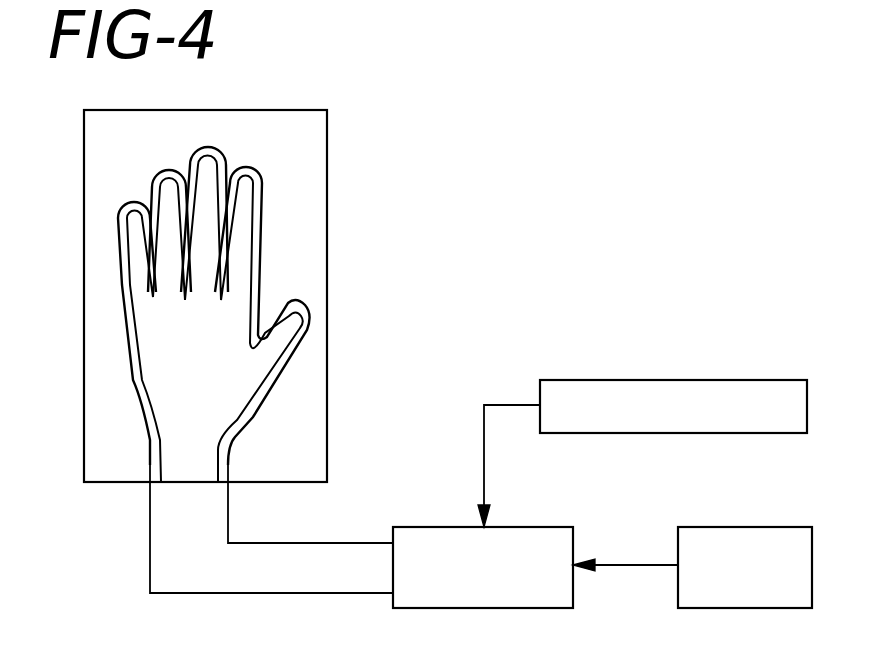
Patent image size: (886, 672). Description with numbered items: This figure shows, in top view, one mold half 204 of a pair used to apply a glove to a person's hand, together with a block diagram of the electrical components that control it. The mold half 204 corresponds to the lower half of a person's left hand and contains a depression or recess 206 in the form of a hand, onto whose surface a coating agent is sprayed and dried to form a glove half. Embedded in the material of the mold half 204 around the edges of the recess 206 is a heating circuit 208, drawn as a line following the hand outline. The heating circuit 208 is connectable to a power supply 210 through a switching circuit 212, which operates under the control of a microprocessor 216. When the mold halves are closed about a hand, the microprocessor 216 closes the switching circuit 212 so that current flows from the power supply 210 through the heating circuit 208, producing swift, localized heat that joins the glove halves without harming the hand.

The mold half 204 is at (312, 125).
The recess 206 is at (243, 232).
The heating circuit 208 is at (118, 235).
The switching circuit 212 is at (433, 527).
The microprocessor 216 is at (702, 380).
The power supply 210 is at (700, 527).